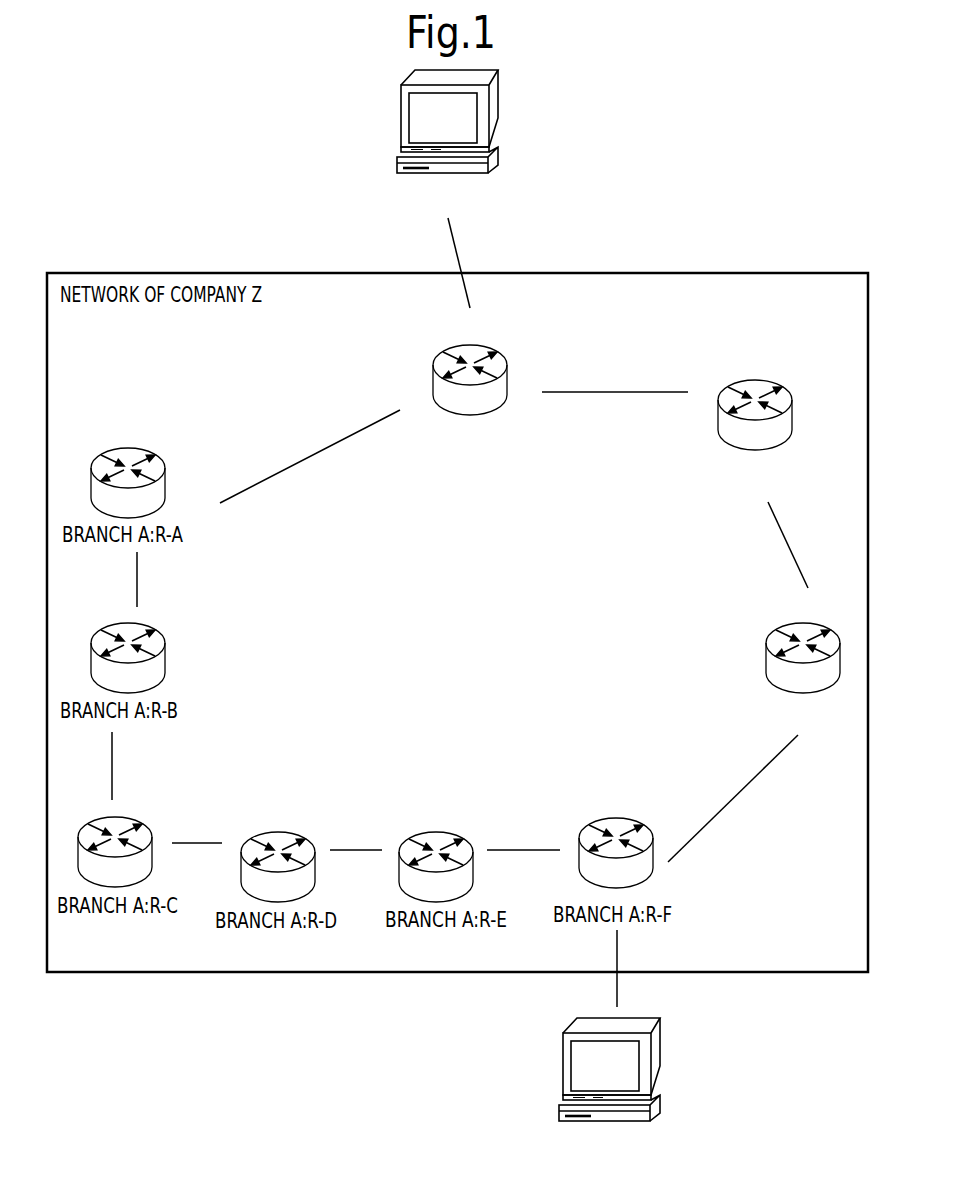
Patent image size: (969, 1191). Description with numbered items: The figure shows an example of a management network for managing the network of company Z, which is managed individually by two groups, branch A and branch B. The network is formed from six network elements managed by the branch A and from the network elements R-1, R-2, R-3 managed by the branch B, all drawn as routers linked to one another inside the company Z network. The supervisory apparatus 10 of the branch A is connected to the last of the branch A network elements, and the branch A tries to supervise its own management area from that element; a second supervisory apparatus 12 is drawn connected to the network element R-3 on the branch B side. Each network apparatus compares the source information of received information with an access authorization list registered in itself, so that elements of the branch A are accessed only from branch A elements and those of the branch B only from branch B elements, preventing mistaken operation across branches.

The network management terminal (computer) 12 is at (503, 85).
The supervisory apparatus 10 is at (662, 1048).
The network element R- 1 is at (793, 675).
The network element R- 2 is at (763, 431).
The network element R- 3 is at (469, 396).